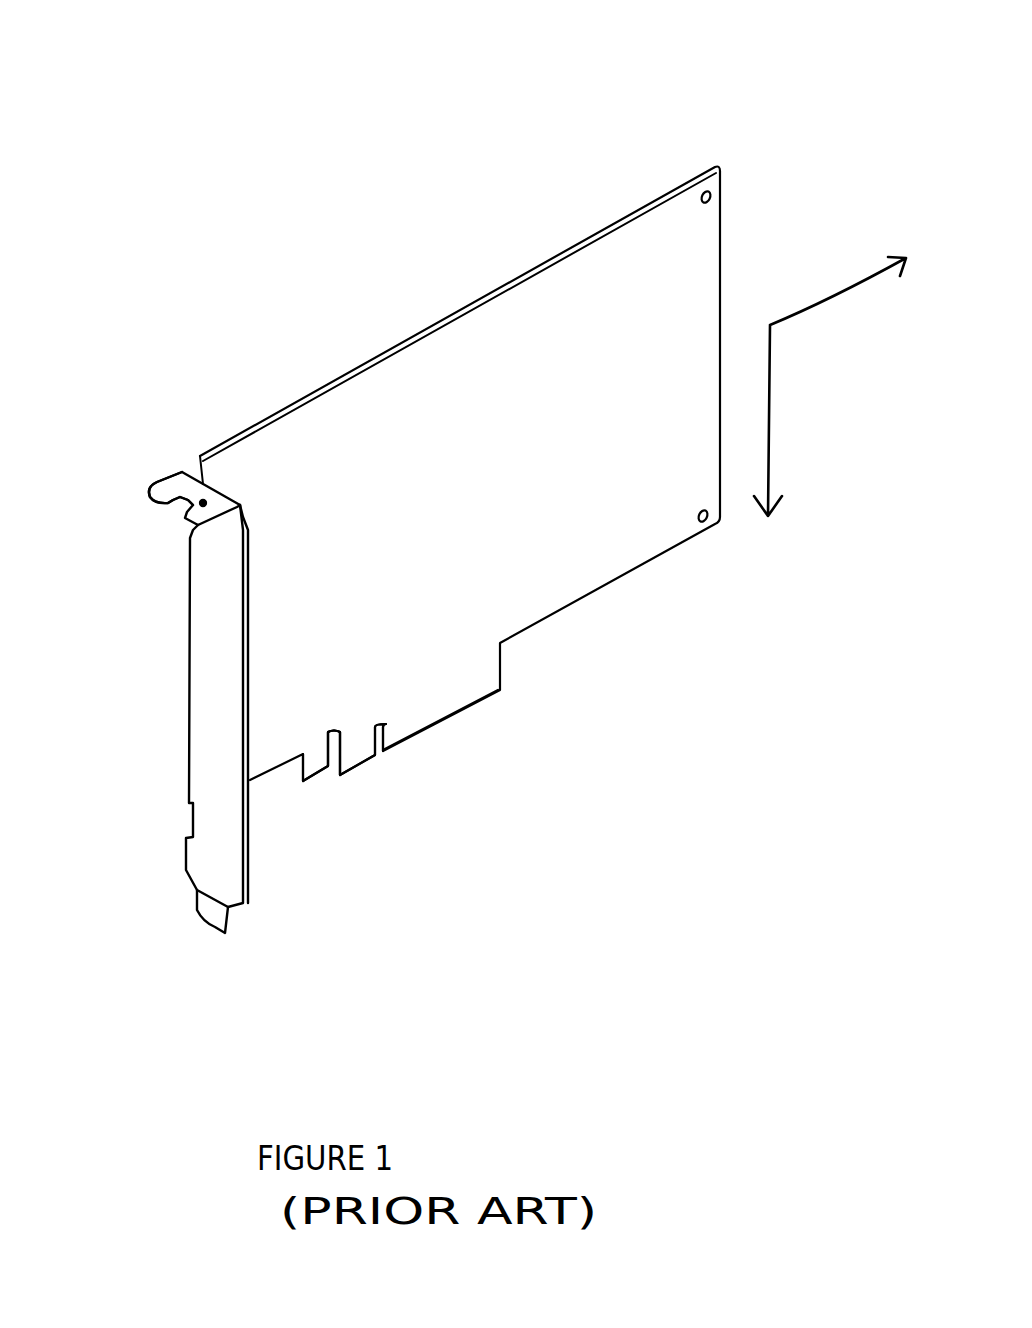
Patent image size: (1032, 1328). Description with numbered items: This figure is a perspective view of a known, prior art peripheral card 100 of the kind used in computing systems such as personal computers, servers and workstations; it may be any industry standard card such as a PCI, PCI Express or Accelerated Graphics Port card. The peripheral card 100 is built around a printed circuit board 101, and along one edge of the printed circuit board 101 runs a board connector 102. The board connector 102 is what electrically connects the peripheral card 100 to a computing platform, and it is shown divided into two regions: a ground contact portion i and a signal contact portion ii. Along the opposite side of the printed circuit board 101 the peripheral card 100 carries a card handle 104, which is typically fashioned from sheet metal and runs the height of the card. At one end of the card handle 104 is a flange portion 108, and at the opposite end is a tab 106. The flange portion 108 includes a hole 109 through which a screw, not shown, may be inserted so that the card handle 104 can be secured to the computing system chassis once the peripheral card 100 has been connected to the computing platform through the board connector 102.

The peripheral card 100 is at (724, 83).
The printed circuit board 101 is at (557, 508).
The board connector 102 is at (523, 690).
The ground contact portion i is at (357, 755).
The signal contact portion ii is at (438, 712).
The card handle 104 is at (143, 483).
The tab 106 is at (213, 913).
The flange portion 108 is at (203, 503).
The hole 109 is at (175, 475).